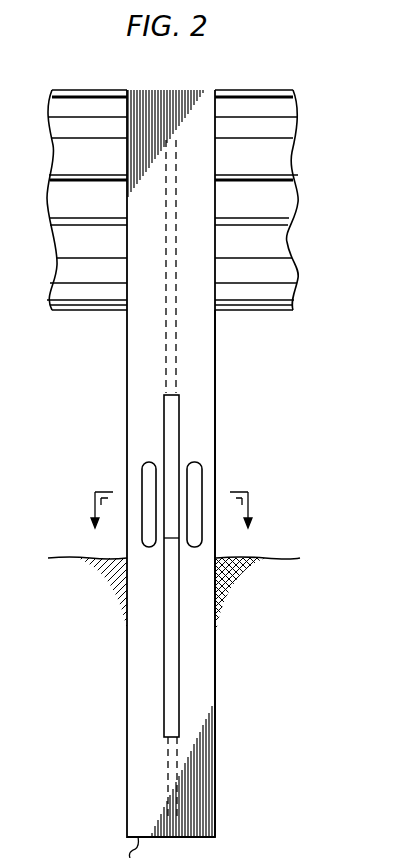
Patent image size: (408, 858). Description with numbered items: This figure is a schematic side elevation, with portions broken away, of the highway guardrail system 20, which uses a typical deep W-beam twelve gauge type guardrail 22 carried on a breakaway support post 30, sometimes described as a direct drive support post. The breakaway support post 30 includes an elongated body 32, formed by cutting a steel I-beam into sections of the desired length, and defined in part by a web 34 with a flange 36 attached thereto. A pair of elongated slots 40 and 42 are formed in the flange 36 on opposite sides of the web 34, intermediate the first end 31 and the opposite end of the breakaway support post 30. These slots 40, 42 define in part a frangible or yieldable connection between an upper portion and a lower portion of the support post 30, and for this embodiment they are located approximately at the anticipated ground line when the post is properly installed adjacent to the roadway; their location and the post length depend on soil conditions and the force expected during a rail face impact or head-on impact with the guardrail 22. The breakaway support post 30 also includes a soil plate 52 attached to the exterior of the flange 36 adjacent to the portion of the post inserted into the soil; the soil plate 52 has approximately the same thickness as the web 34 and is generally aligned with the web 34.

The highway guardrail system 20 is at (266, 57).
The guardrail 22 is at (69, 86).
The breakaway support post 30 is at (86, 335).
The first end 31 is at (183, 90).
The elongated body 32 is at (116, 368).
The web 34 is at (177, 322).
The flange 36 is at (208, 385).
The elongated slot 40 is at (149, 466).
The elongated slot 42 is at (193, 466).
The soil plate 52 is at (168, 648).